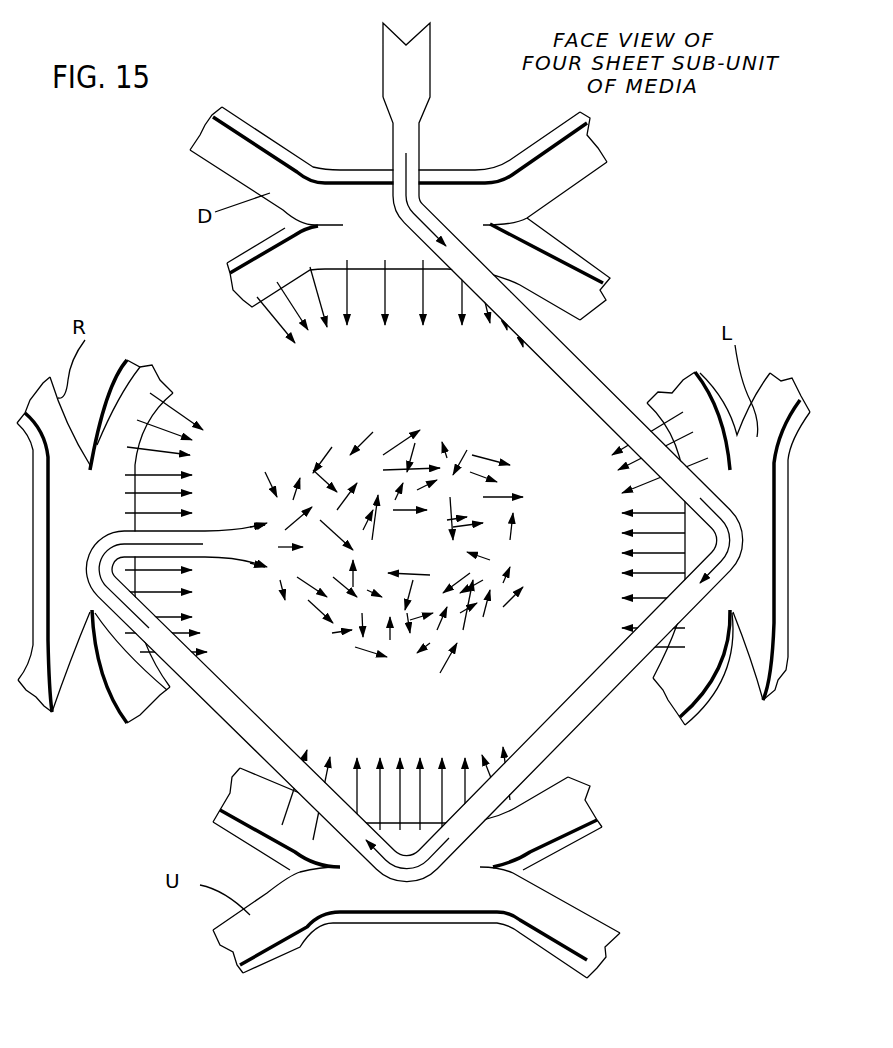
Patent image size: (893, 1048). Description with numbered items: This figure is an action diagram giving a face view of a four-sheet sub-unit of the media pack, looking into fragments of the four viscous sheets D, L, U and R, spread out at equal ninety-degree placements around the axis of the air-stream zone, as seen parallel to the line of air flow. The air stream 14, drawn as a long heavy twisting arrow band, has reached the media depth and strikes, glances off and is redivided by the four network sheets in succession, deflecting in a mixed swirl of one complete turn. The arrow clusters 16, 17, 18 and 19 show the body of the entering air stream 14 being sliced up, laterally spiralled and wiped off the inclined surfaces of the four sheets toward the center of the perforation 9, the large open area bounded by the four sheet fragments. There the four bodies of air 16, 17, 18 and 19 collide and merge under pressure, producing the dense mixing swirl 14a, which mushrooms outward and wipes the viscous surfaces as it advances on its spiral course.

The perforation 9 is at (413, 542).
The air stream 14 is at (414, 452).
The mixing swirl 14a is at (386, 551).
The arrow cluster 16 is at (390, 310).
The arrow cluster 17 is at (647, 529).
The arrow cluster 18 is at (396, 783).
The arrow cluster 19 is at (178, 522).